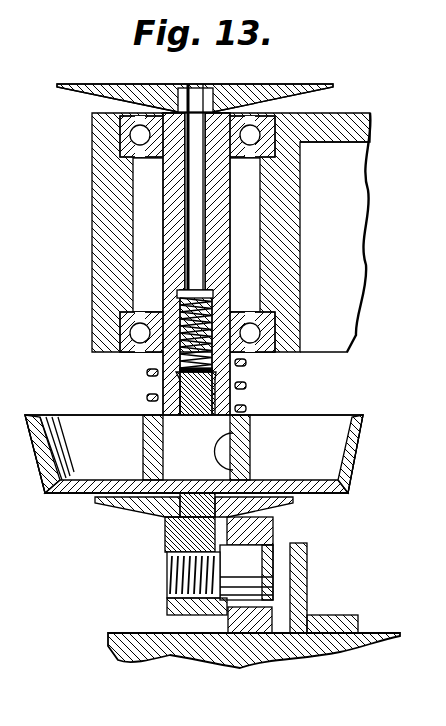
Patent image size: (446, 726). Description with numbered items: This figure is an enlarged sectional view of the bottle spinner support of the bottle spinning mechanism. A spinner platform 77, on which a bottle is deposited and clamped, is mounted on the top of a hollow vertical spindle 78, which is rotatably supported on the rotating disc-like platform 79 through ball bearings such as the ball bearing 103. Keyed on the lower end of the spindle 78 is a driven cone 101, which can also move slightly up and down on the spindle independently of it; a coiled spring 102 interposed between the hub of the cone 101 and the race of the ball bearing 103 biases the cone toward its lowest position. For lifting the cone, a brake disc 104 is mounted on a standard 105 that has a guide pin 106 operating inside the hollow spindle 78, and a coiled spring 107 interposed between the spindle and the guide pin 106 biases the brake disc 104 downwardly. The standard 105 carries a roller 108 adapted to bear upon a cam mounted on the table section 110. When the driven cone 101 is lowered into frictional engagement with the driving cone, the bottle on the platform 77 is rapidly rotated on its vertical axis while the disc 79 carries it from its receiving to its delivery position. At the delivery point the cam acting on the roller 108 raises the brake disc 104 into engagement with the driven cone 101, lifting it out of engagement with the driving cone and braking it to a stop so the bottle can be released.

The spinner platform 77 is at (274, 88).
The disc-like platform 79 is at (365, 113).
The spindle 78 is at (224, 203).
The ball bearing 103 is at (267, 330).
The coiled spring 107 is at (163, 360).
The guide pin 106 is at (176, 404).
The coiled spring 102 is at (246, 386).
The driven cone 101 is at (325, 448).
The brake disc 104 is at (124, 499).
The roller 108 is at (262, 526).
The standard 105 is at (178, 538).
The table section 110 is at (222, 656).